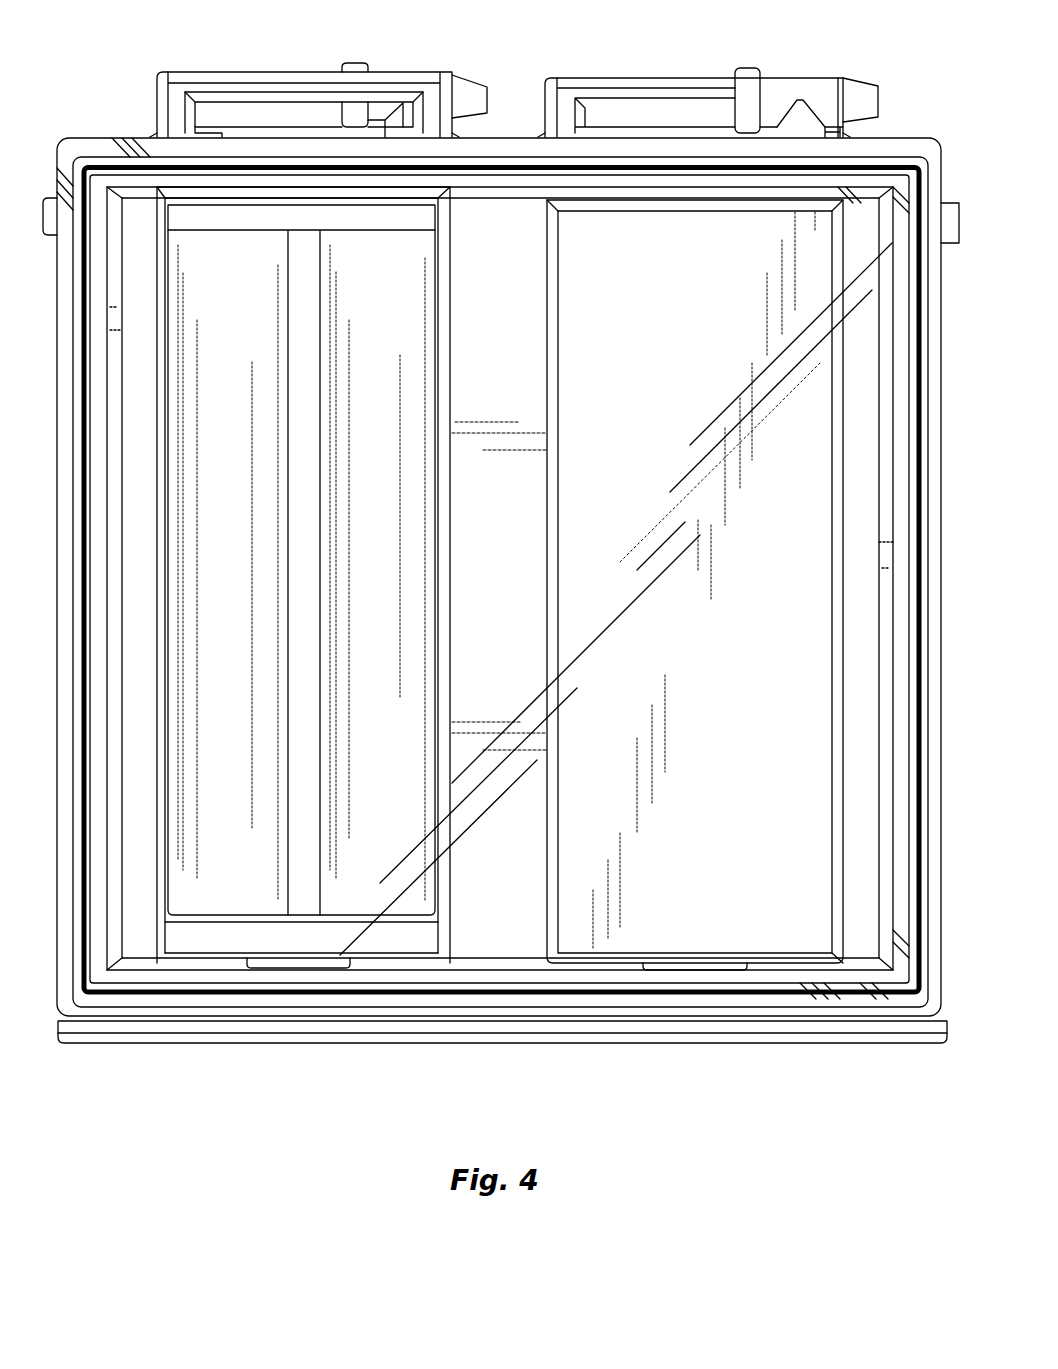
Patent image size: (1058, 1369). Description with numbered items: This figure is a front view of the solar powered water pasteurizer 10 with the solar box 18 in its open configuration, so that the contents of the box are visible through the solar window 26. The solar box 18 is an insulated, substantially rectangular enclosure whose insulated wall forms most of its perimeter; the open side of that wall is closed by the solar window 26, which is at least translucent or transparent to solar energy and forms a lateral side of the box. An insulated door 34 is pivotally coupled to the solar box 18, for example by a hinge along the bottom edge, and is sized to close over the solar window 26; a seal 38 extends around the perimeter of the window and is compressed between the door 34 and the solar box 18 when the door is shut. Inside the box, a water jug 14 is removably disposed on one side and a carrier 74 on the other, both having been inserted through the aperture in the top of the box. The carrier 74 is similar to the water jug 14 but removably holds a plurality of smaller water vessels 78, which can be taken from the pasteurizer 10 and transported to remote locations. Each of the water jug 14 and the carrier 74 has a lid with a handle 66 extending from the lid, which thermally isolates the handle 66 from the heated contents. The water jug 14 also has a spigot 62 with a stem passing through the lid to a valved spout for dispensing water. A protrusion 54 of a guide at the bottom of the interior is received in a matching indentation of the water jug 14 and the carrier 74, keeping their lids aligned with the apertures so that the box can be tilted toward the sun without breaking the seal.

The solar powered water pasteurizer 10 is at (475, 1052).
The water jug 14 is at (648, 930).
The solar box 18 is at (787, 1008).
The solar window 26 is at (860, 233).
The insulated door 34 is at (917, 1028).
The seal 38 is at (108, 995).
The protrusion 54 is at (295, 968).
The spigot 62 is at (790, 95).
The handle 66 is at (710, 72).
The carrier 74 is at (242, 928).
The water vessels 78 is at (391, 883).